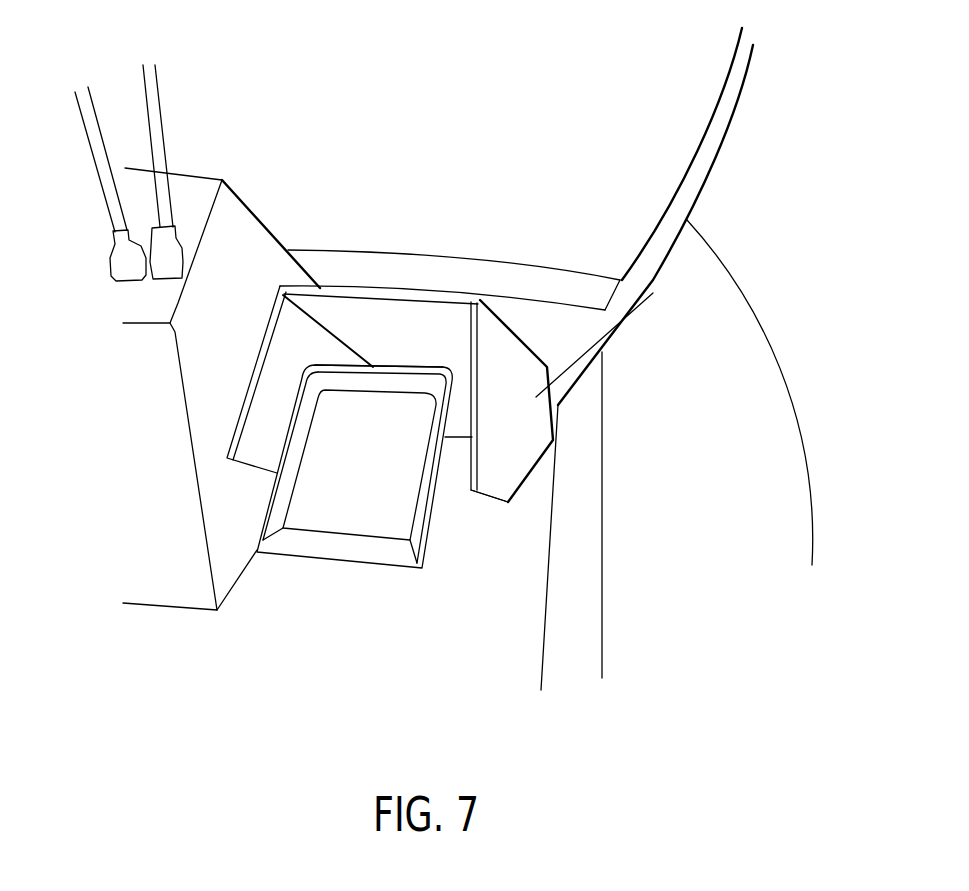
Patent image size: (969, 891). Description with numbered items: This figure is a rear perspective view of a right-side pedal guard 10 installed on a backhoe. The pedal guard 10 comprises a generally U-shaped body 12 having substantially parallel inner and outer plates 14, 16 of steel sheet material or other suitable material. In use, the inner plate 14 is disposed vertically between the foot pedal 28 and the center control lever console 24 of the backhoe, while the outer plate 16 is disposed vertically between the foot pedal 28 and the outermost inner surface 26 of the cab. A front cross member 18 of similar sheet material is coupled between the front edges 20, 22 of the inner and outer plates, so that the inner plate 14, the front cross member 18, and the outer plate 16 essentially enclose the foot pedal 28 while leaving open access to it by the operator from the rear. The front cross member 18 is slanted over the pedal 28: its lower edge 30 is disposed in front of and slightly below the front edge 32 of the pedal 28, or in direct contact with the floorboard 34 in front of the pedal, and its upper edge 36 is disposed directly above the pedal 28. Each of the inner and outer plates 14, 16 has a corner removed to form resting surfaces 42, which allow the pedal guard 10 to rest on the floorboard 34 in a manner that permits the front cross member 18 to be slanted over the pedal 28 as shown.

The pedal guard 10 is at (495, 340).
The body 12 is at (513, 358).
The inner plate 14 is at (275, 337).
The outer plate 16 is at (603, 352).
The front cross member 18 is at (397, 310).
The front edge of inner plate 20 is at (307, 317).
The front edge of outer plate 22 is at (542, 357).
The center control lever console 24 is at (232, 242).
The outermost inner surface of the cab 26 is at (580, 456).
The foot pedal 28 is at (358, 492).
The lower edge 30 is at (455, 435).
The front edge of the pedal 32 is at (379, 365).
The floorboard 34 is at (478, 590).
The upper edge 36 is at (421, 292).
The resting surfaces 42 is at (527, 481).